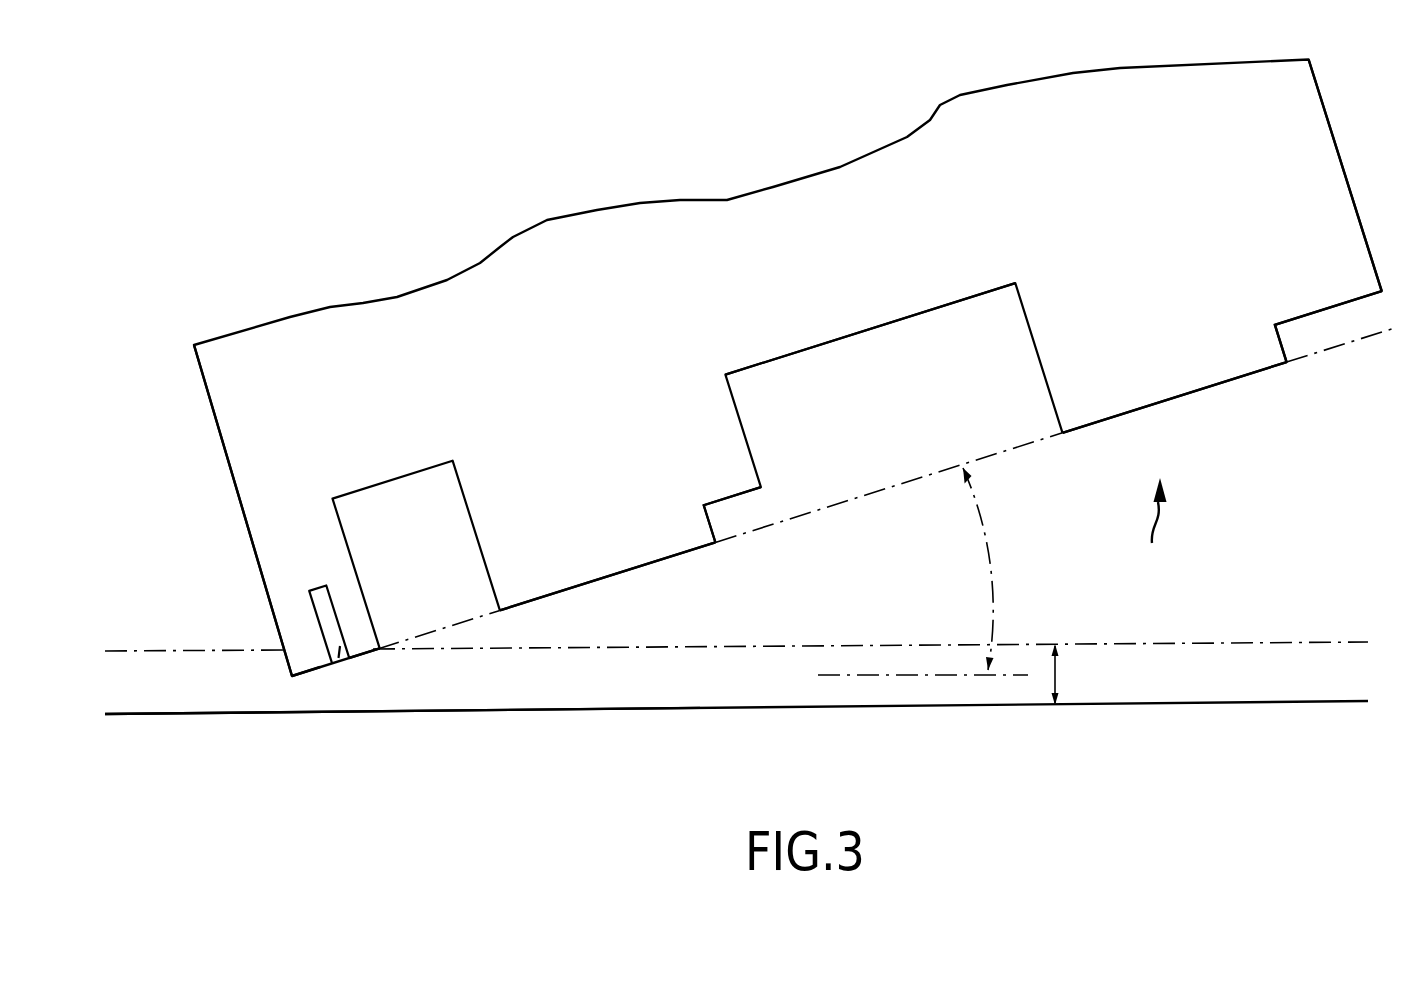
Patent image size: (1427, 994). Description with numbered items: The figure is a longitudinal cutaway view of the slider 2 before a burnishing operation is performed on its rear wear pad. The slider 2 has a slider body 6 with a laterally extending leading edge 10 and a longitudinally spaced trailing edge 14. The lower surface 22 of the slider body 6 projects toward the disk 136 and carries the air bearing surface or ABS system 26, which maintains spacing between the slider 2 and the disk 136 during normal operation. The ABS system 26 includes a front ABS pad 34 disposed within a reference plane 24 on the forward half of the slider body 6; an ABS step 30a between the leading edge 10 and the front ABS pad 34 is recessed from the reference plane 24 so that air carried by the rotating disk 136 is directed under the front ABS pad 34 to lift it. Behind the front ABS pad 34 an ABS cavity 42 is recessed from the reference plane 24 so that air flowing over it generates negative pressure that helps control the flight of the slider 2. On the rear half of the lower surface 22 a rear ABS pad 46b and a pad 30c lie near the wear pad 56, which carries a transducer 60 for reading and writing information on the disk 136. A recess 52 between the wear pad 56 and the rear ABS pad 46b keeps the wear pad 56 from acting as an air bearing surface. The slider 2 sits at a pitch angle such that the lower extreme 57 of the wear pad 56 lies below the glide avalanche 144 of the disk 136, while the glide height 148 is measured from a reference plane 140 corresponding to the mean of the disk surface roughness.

The slider 2 is at (703, 252).
The slider body 6 is at (207, 392).
The leading edge 10 is at (1380, 292).
The trailing edge 14 is at (293, 679).
The lower surface 22 is at (808, 350).
The reference plane 24 is at (865, 495).
The ABS system 26 is at (1159, 531).
The ABS step 30a is at (1300, 317).
The notch 30c is at (733, 497).
The front ABS pad 34 is at (1207, 390).
The ABS cavity 42 is at (897, 320).
The rear ABS pad 46b is at (612, 573).
The recess 52 is at (377, 488).
The wear pad 56 is at (373, 648).
The lower extreme 57 is at (300, 675).
The transducer 60 is at (338, 658).
The disk 136 is at (573, 707).
The reference plane 140 is at (790, 705).
The glide avalanche 144 is at (735, 644).
The glide height 148 is at (1055, 668).